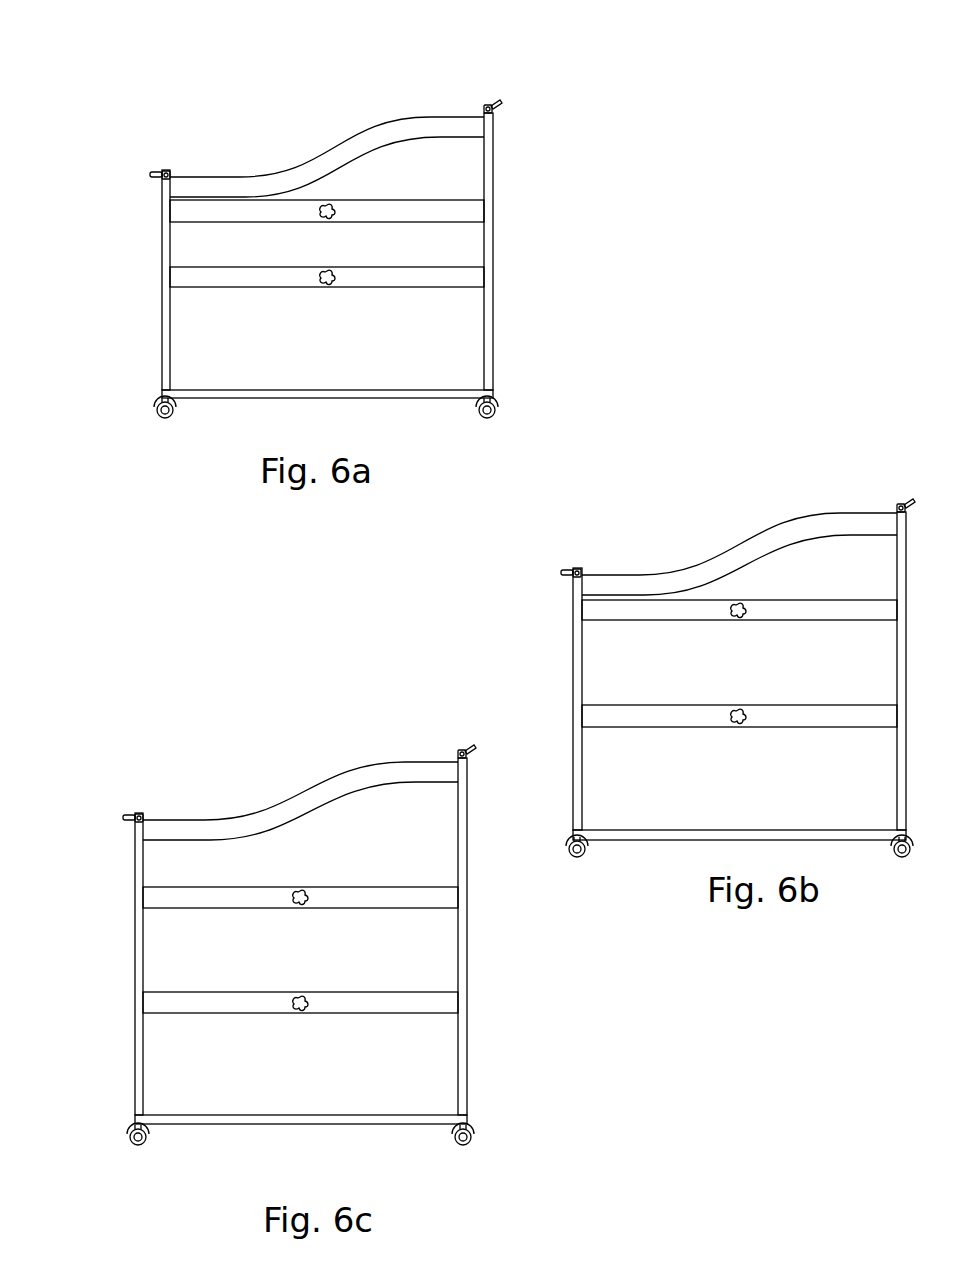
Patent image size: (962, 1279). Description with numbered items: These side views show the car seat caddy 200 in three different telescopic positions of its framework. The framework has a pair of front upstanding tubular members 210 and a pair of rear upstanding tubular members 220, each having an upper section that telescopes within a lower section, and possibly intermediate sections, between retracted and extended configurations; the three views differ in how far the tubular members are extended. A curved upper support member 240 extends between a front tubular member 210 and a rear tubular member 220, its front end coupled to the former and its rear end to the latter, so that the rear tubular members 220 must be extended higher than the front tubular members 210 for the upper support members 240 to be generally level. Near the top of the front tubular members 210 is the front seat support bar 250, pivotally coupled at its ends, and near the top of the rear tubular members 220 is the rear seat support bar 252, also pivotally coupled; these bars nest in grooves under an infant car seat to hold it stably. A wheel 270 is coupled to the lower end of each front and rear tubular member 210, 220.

In FIG. 6A, the car seat caddy 200 is at (244, 88).
In FIG. 6B, the car seat caddy 200 is at (722, 525).
In FIG. 6C, the car seat caddy 200 is at (240, 765).
In FIG. 6A, the front upstanding tubular member 210 is at (155, 290).
In FIG. 6B, the front upstanding tubular member 210 is at (566, 663).
In FIG. 6C, the front upstanding tubular member 210 is at (125, 960).
In FIG. 6A, the rear upstanding tubular member 220 is at (500, 238).
In FIG. 6B, the rear upstanding tubular member 220 is at (887, 765).
In FIG. 6C, the rear upstanding tubular member 220 is at (475, 970).
In FIG. 6A, the upper support member 240 is at (352, 146).
In FIG. 6B, the upper support member 240 is at (739, 554).
In FIG. 6C, the upper support member 240 is at (300, 801).
In FIG. 6A, the front seat support bar 250 is at (150, 166).
In FIG. 6B, the front seat support bar 250 is at (571, 573).
In FIG. 6C, the front seat support bar 250 is at (133, 818).
In FIG. 6A, the rear seat support bar 252 is at (506, 100).
In FIG. 6B, the rear seat support bar 252 is at (906, 505).
In FIG. 6C, the rear seat support bar 252 is at (467, 751).
In FIG. 6A, the wheel 270 is at (165, 420).
In FIG. 6B, the wheel 270 is at (739, 846).
In FIG. 6C, the wheel 270 is at (300, 1134).